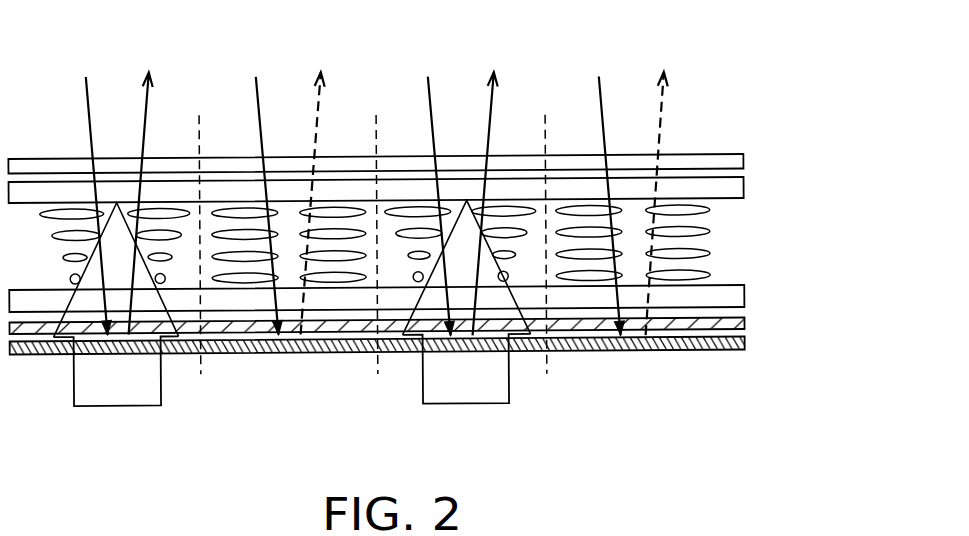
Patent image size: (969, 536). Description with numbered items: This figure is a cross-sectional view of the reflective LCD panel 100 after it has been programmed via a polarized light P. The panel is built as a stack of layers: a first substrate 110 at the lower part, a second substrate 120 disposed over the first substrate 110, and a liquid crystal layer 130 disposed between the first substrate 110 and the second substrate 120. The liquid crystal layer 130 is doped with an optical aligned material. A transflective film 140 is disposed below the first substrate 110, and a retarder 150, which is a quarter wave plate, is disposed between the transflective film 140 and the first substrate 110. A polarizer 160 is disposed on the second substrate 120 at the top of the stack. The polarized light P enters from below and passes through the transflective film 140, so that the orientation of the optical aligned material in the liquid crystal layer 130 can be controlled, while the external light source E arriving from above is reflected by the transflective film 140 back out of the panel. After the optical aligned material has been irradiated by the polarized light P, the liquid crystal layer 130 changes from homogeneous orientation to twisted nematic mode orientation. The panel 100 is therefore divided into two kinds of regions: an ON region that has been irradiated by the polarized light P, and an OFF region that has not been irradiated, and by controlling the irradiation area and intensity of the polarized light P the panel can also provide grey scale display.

The reflective LCD panel 100 is at (410, 251).
The first substrate 110 is at (728, 293).
The second substrate 120 is at (735, 190).
The liquid crystal layer 130 is at (693, 231).
The transflective film 140 is at (740, 346).
The retarder 150 is at (727, 325).
The polarizer 160 is at (732, 164).
The polarized light P is at (147, 381).
The external light source E is at (91, 116).